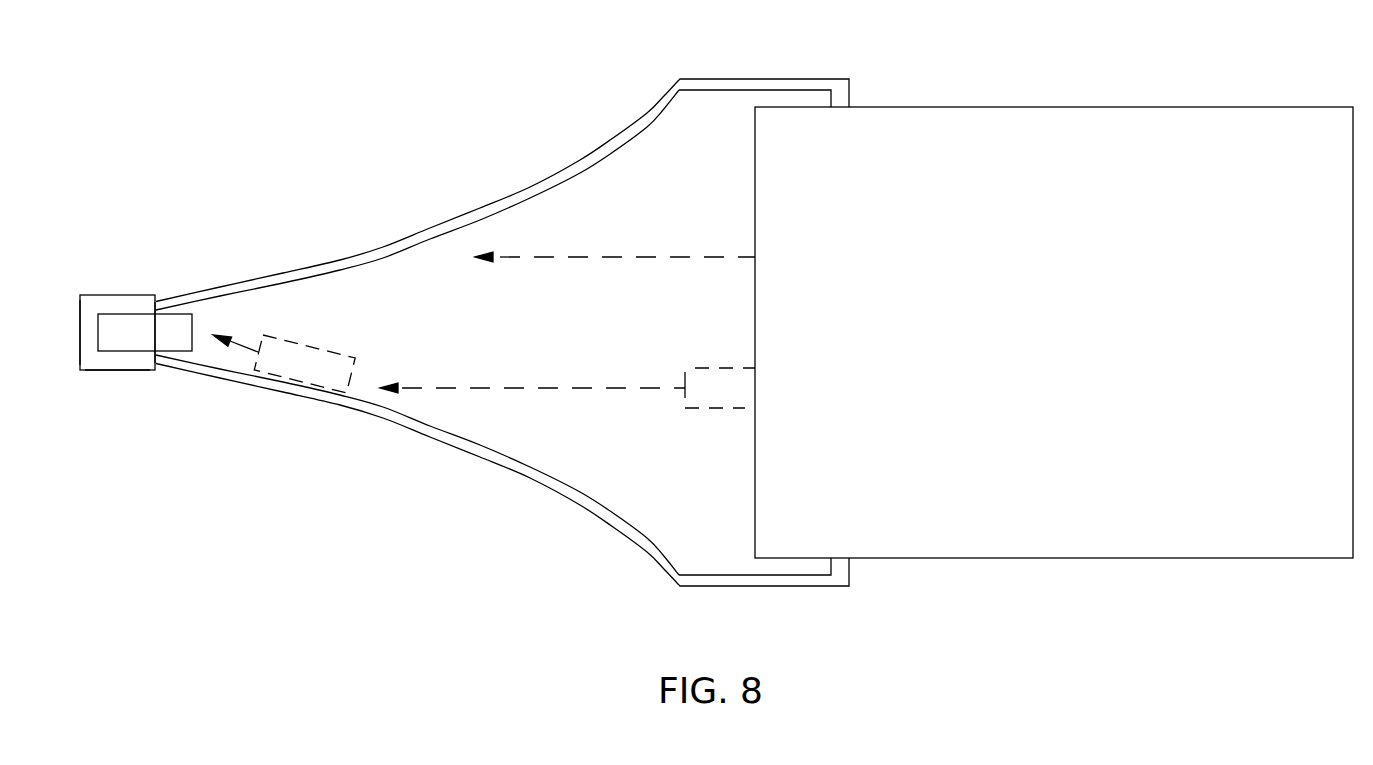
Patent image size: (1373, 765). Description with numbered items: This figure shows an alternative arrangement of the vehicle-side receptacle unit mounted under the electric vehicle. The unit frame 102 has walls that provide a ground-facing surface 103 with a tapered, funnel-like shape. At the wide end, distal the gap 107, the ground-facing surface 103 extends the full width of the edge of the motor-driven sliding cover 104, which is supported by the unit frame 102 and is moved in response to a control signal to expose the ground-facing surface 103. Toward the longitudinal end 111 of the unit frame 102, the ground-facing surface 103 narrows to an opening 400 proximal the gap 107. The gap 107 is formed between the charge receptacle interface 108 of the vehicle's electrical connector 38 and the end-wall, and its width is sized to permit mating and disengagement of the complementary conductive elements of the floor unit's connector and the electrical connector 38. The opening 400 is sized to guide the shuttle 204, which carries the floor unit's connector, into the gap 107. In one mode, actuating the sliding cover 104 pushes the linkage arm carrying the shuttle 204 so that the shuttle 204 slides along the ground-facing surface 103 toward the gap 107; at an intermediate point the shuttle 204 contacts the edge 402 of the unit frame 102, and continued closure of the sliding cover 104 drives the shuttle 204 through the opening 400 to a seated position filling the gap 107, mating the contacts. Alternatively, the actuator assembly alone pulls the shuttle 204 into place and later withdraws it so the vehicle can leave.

The electrical connector 38 is at (80, 338).
The unit frame 102 is at (738, 78).
The ground-facing surface 103 is at (575, 311).
The sliding cover 104 is at (1035, 344).
The gap 107 is at (117, 360).
The charge receptacle interface 108 is at (78, 307).
The longitudinal end 111 is at (175, 280).
The shuttle 204 is at (125, 344).
The opening 400 is at (205, 323).
The edge 402 is at (490, 452).